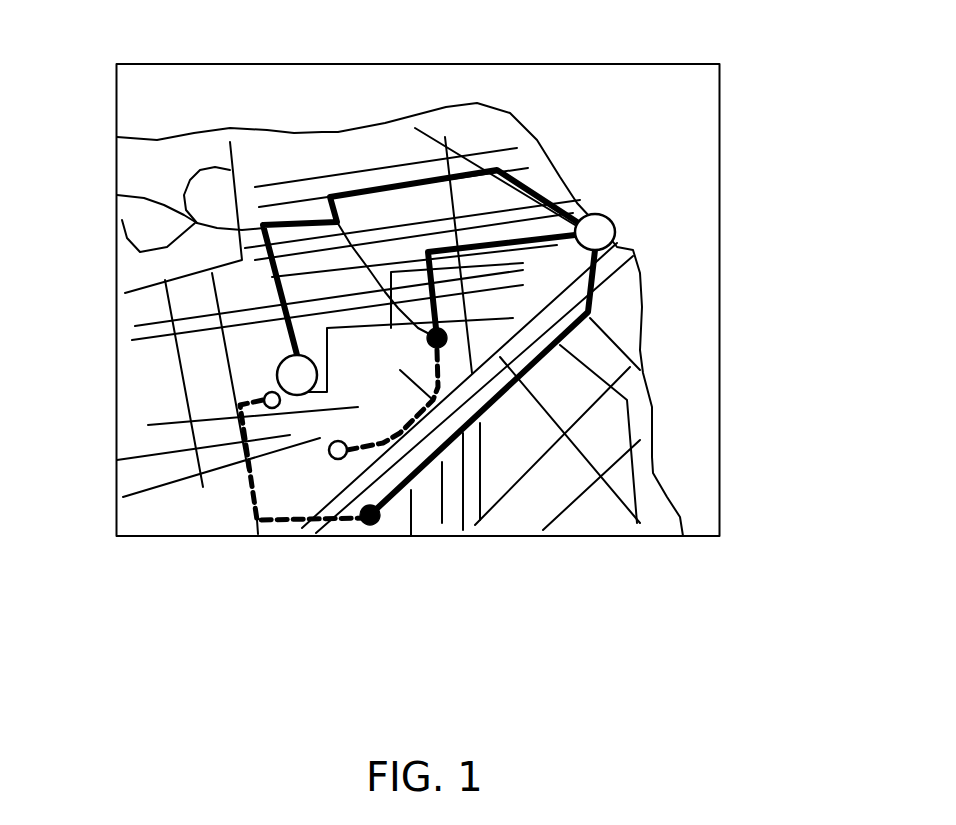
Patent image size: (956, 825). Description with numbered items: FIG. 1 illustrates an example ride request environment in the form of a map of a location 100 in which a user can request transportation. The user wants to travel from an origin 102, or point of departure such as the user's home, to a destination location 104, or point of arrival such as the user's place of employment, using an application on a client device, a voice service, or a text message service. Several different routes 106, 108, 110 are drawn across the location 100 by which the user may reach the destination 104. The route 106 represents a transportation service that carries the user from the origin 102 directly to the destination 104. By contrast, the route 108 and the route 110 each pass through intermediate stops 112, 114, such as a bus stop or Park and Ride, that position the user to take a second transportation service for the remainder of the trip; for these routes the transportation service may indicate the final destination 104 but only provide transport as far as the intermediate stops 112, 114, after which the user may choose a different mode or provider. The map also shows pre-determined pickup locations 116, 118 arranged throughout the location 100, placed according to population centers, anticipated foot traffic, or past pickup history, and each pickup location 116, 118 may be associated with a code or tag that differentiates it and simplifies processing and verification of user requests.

The location 100 is at (790, 105).
The origin 102 is at (277, 376).
The destination location 104 is at (600, 214).
The route 106 is at (117, 197).
The route 108 is at (432, 248).
The route 110 is at (557, 345).
The intermediate stop 112 is at (337, 222).
The intermediate stop 114 is at (370, 515).
The pickup location 116 is at (263, 400).
The pickup location 118 is at (329, 451).